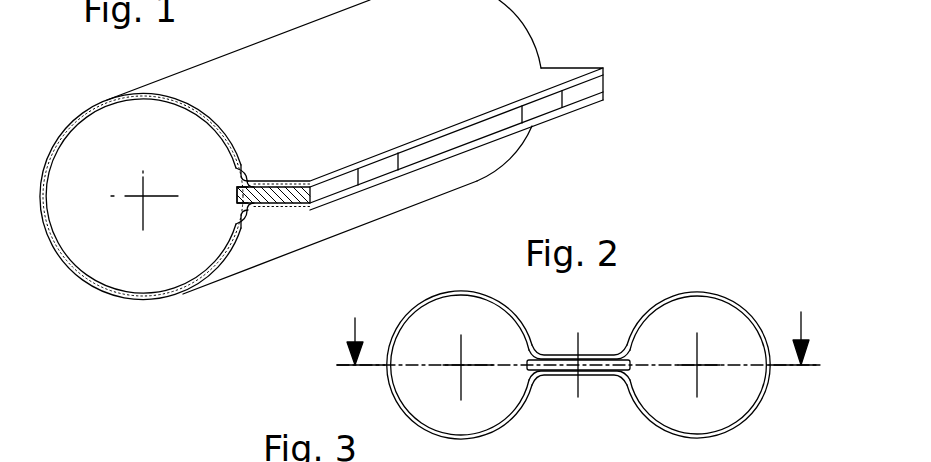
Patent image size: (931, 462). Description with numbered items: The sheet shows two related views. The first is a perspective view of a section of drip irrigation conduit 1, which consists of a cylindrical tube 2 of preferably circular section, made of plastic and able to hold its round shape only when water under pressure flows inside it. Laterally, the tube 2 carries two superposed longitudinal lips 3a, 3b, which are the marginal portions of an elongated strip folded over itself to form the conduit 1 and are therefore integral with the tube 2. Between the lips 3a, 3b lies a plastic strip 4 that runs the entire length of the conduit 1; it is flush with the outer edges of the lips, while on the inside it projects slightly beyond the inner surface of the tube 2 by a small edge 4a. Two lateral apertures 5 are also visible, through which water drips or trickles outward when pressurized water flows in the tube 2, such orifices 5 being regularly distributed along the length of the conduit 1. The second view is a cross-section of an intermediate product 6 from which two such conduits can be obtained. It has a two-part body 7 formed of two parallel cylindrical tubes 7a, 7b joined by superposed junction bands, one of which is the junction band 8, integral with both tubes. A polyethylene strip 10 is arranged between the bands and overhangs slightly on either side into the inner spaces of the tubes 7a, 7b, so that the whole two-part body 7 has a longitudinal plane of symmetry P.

In FIG. 1, the drip irrigation conduit 1 is at (277, 58).
In FIG. 1, the cylindrical tube 2 is at (147, 300).
In FIG. 1, the longitudinal lip 3a is at (420, 123).
In FIG. 1, the longitudinal lip 3b is at (270, 211).
In FIG. 1, the strip 4 is at (455, 138).
In FIG. 1, the small edge 4a is at (237, 196).
In FIG. 1, the lateral aperture 5 is at (380, 168).
In FIG. 2, the intermediate product 6 is at (648, 284).
In FIG. 2, the two-part body 7 is at (532, 308).
In FIG. 2, the cylindrical tube 7a is at (388, 381).
In FIG. 2, the cylindrical tube 7b is at (768, 380).
In FIG. 2, the junction band 8 is at (596, 356).
In FIG. 2, the strip 10 is at (557, 373).
In FIG. 2, the longitudinal plane of symmetry P is at (585, 388).